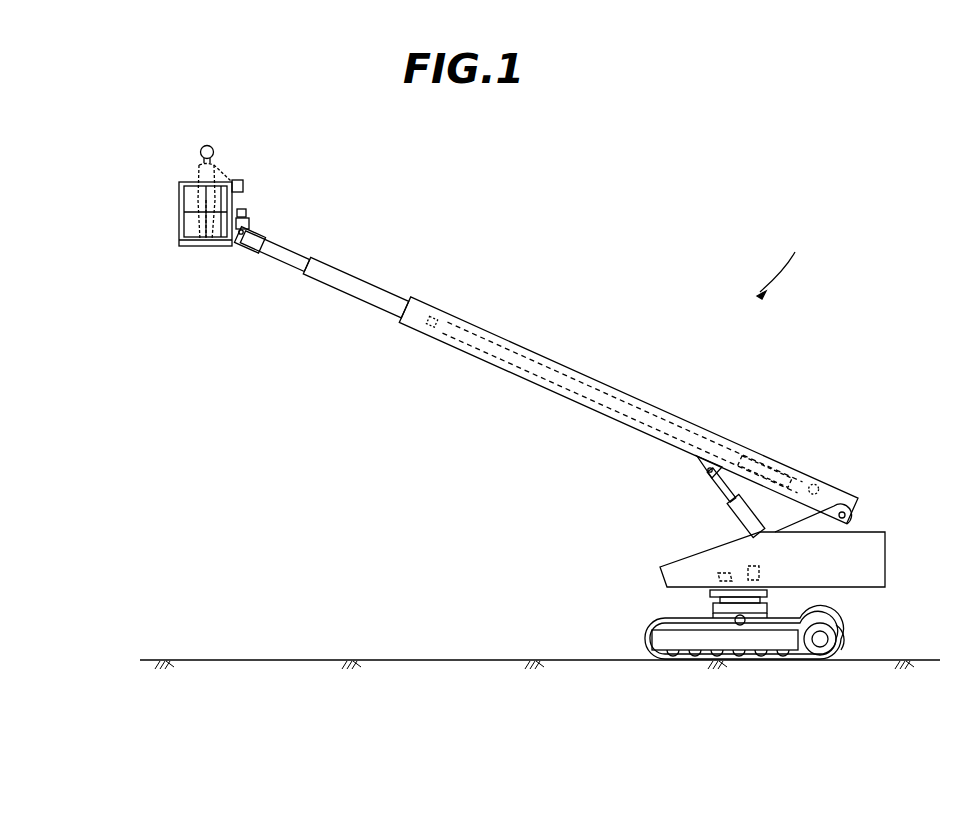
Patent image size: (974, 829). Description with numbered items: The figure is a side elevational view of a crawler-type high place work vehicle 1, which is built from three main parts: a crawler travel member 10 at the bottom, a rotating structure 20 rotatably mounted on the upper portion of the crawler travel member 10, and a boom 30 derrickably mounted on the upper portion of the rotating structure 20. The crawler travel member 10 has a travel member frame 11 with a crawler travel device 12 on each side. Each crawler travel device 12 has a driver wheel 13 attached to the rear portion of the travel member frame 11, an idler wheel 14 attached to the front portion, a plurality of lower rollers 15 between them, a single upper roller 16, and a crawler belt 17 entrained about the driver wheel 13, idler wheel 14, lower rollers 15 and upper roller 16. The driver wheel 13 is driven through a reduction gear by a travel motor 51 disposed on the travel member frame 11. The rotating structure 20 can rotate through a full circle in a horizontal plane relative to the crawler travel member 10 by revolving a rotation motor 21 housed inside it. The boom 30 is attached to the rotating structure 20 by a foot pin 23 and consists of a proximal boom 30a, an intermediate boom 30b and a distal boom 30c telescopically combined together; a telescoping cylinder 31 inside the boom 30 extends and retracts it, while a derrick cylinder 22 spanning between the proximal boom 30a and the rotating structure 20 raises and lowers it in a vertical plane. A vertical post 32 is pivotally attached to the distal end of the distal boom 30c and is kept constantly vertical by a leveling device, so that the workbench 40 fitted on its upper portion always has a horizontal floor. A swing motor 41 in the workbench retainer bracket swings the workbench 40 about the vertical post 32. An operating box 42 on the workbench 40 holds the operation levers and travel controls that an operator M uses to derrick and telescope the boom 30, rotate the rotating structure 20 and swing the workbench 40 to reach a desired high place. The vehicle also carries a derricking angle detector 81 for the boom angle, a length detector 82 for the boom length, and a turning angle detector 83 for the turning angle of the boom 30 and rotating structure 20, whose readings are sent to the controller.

The crawler-type high place work vehicle 1 is at (780, 261).
The crawler travel member 10 is at (755, 649).
The travel member frame 11 is at (768, 606).
The crawler travel device 12 is at (845, 616).
The driver wheel 13 is at (819, 655).
The idler wheel 14 is at (655, 645).
The lower rollers 15 is at (718, 668).
The upper roller 16 is at (735, 620).
The crawler belt 17 is at (845, 636).
The rotating structure 20 is at (805, 539).
The rotation motor 21 is at (762, 573).
The derrick cylinder 22 is at (738, 520).
The foot pin 23 is at (848, 513).
The boom 30 is at (555, 352).
The proximal boom 30a is at (634, 382).
The intermediate boom 30b is at (377, 283).
The distal boom 30c is at (304, 236).
The telescoping cylinder 31 is at (612, 386).
The vertical post 32 is at (246, 211).
The workbench 40 is at (213, 250).
The swing motor 41 is at (250, 222).
The operating box 42 is at (244, 182).
The travel motor 51 is at (828, 650).
The derricking angle detector 81 is at (818, 484).
The length detector 82 is at (440, 312).
The turning angle detector 83 is at (716, 578).
The operator M is at (204, 166).